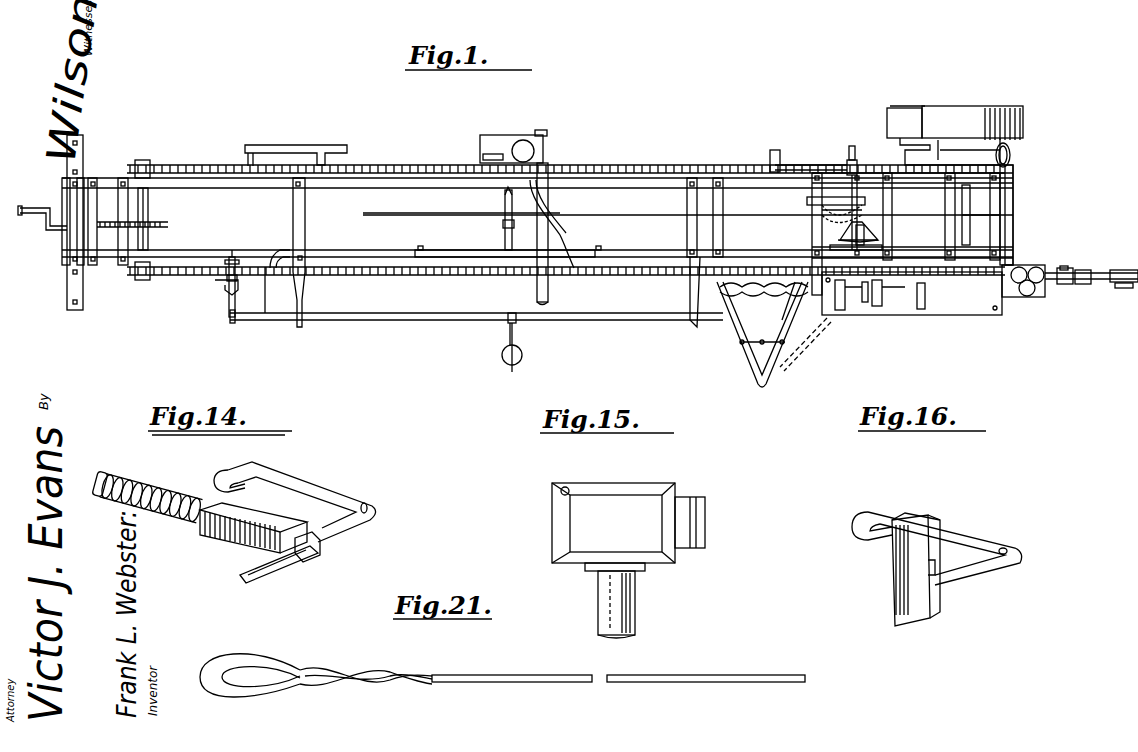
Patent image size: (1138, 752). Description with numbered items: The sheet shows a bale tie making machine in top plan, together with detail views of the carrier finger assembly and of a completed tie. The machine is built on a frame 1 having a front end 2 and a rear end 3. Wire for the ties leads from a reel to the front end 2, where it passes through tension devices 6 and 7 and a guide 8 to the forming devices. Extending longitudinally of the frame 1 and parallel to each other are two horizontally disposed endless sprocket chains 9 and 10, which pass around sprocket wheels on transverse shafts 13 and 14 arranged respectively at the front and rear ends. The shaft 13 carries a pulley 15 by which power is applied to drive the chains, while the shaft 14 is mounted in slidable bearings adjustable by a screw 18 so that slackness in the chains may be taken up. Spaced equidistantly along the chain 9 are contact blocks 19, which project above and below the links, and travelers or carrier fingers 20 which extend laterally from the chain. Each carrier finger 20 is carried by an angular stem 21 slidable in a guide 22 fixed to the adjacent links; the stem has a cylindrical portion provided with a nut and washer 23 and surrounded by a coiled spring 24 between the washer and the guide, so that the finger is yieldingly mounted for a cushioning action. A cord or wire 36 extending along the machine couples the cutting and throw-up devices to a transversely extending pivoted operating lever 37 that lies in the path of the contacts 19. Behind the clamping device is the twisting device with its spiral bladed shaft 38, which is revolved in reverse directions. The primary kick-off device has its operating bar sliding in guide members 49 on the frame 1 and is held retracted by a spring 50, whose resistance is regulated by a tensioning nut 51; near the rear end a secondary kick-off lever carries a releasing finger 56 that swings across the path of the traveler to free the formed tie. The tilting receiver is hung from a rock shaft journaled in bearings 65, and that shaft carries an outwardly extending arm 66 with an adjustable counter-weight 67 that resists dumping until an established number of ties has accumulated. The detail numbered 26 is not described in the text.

In FIG. 1, the frame 1 is at (341, 188).
In FIG. 1, the front end 2 is at (1005, 204).
In FIG. 1, the rear end 3 is at (66, 236).
In FIG. 1, the tension device 6 is at (1084, 286).
In FIG. 1, the tension device 7 is at (1028, 292).
In FIG. 1, the guide 8 is at (927, 298).
In FIG. 1, the sprocket chain 9 is at (490, 272).
In FIG. 14, the sprocket chain 9 is at (322, 490).
In FIG. 16, the sprocket chain 9 is at (937, 545).
In FIG. 1, the sprocket chain 10 is at (590, 164).
In FIG. 15, the sprocket chain 10 is at (628, 523).
In FIG. 1, the transverse shaft 13 is at (968, 228).
In FIG. 1, the transverse shaft 14 is at (148, 212).
In FIG. 1, the pulley 15 is at (978, 118).
In FIG. 1, the screw 18 is at (104, 220).
In FIG. 16, the contact block 19 is at (895, 592).
In FIG. 14, the carrier finger 20 is at (276, 575).
In FIG. 14, the angular stem 21 is at (318, 556).
In FIG. 14, the guide 22 is at (230, 525).
In FIG. 14, the nut and washer 23 is at (103, 478).
In FIG. 14, the coiled spring 24 is at (162, 494).
In FIG. 15, the stem 26 is at (635, 615).
In FIG. 1, the cord or wire 36 is at (640, 212).
In FIG. 1, the operating lever 37 is at (565, 238).
In FIG. 1, the spiral bladed shaft 38 is at (765, 290).
In FIG. 1, the guide member 49 is at (875, 222).
In FIG. 1, the spring 50 is at (840, 236).
In FIG. 1, the tensioning nut 51 is at (848, 240).
In FIG. 1, the releasing finger 56 is at (248, 285).
In FIG. 1, the bearing 65 is at (306, 300).
In FIG. 1, the arm 66 is at (516, 338).
In FIG. 1, the counter-weight 67 is at (522, 358).